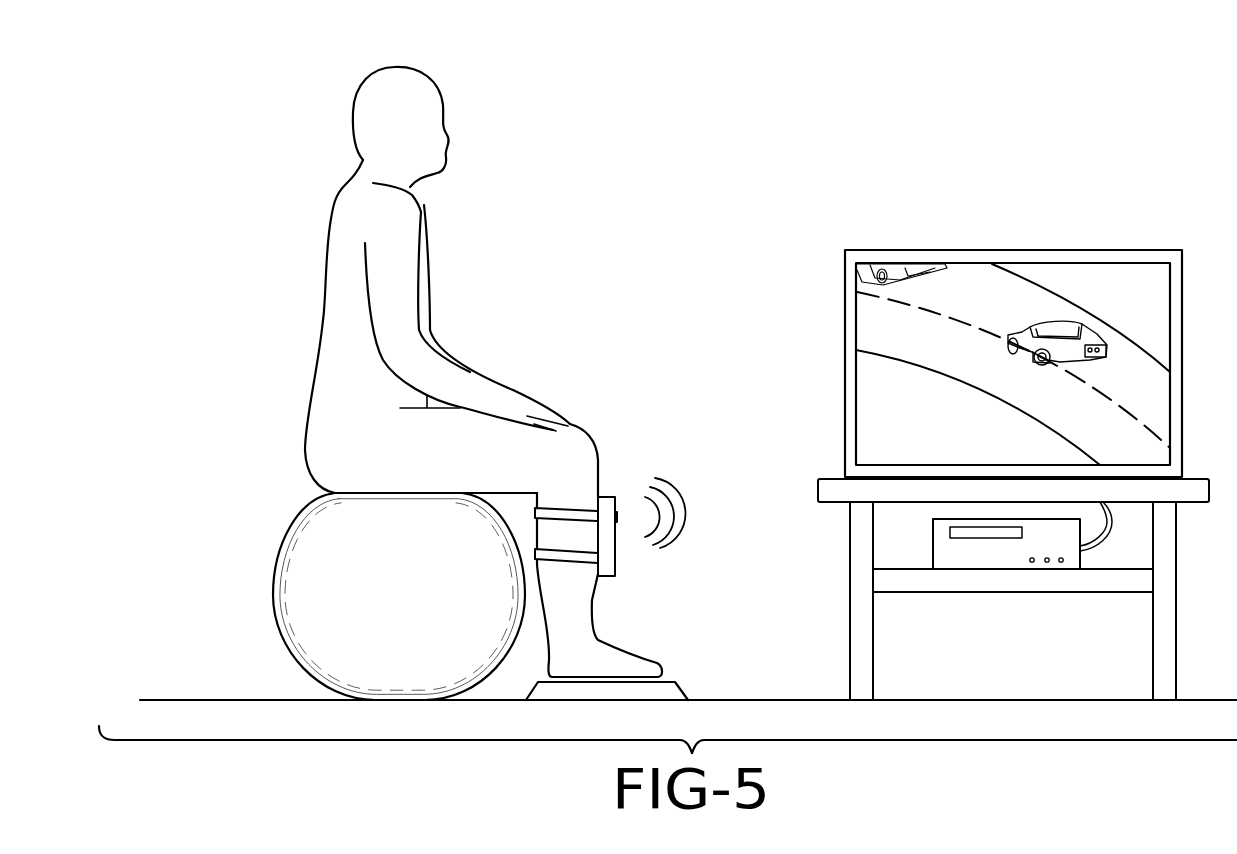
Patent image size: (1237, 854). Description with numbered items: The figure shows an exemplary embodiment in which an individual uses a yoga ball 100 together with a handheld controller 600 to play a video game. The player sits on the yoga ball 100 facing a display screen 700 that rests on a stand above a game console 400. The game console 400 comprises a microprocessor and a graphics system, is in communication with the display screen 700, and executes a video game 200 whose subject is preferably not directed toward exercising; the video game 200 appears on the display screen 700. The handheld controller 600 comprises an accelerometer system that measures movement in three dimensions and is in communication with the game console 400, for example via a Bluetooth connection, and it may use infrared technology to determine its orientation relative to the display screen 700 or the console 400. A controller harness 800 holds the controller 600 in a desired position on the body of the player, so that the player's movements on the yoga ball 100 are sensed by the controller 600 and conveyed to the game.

The yoga ball 100 is at (308, 567).
The video game 200 is at (1077, 280).
The game console 400 is at (993, 553).
The handheld controller 600 is at (610, 513).
The display screen 700 is at (1013, 311).
The controller harness 800 is at (562, 556).